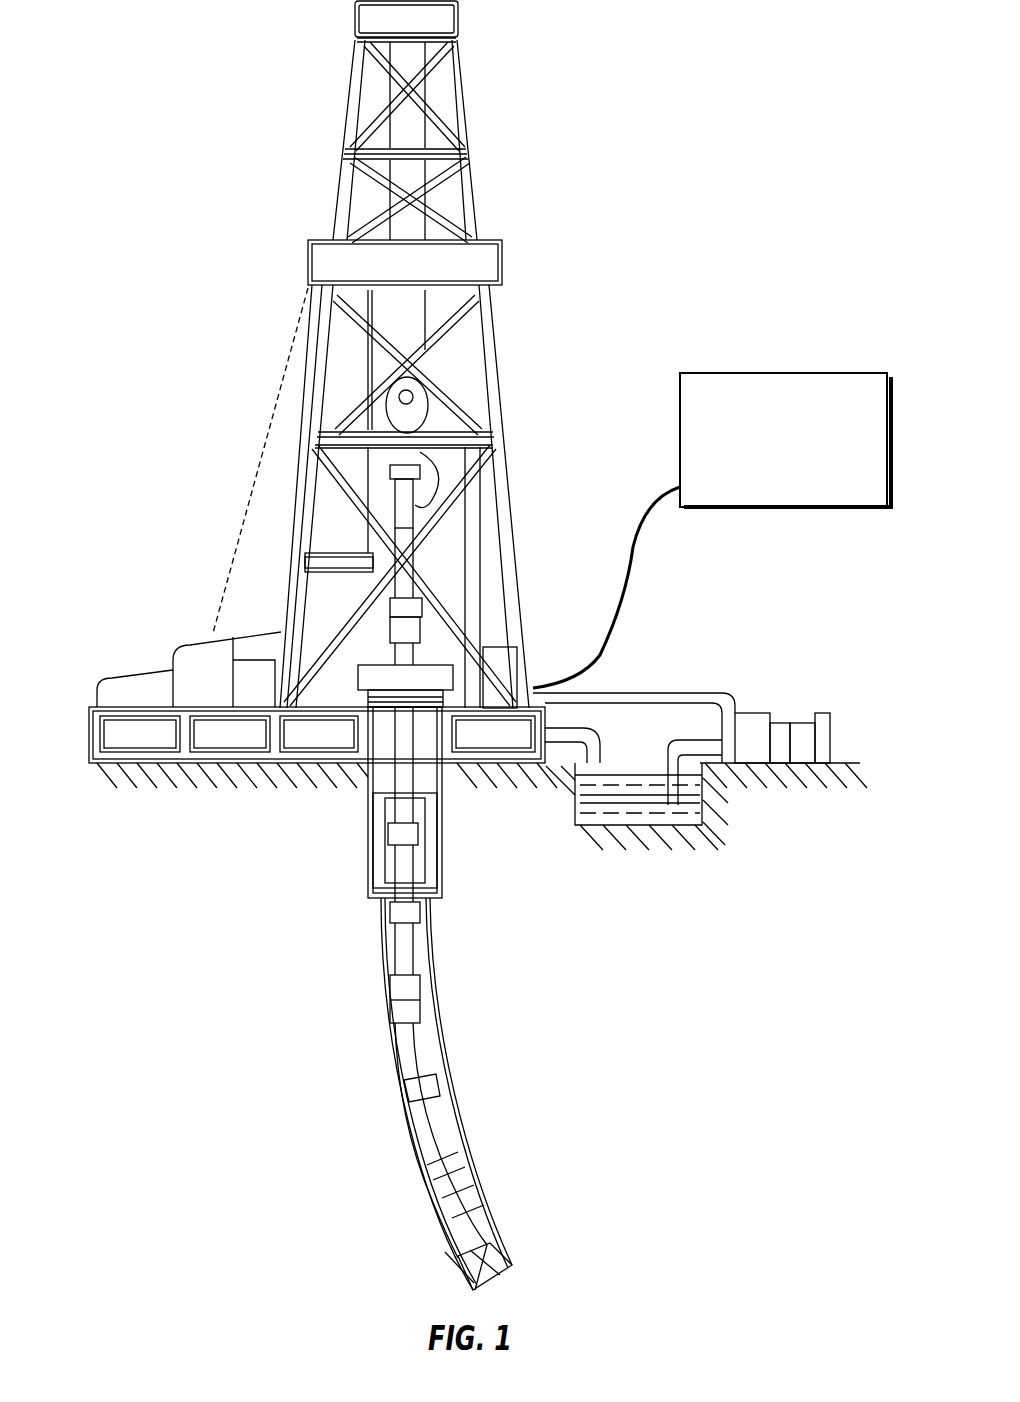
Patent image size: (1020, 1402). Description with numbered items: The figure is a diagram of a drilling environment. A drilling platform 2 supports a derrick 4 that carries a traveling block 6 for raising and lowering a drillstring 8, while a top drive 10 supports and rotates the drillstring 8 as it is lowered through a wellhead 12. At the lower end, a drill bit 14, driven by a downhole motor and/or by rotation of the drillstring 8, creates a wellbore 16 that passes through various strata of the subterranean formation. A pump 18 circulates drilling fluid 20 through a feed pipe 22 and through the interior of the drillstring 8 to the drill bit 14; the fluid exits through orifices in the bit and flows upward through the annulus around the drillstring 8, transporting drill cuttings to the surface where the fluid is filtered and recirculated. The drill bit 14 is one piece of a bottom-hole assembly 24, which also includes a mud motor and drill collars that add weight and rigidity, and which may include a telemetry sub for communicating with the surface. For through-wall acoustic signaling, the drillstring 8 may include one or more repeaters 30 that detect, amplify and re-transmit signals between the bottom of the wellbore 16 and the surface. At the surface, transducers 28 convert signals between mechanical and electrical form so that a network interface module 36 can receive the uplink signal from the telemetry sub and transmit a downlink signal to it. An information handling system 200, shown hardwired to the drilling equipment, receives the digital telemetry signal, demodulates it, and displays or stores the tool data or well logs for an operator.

The drilling platform 2 is at (90, 740).
The derrick 4 is at (478, 200).
The traveling block 6 is at (430, 387).
The drillstring 8 is at (410, 950).
The top drive 10 is at (417, 463).
The wellhead 12 is at (437, 665).
The drill bit 14 is at (505, 1250).
The wellbore 16 is at (445, 1023).
The pump 18 is at (750, 725).
The drilling fluid 20 is at (612, 810).
The feed pipe 22 is at (645, 690).
The bottom-hole assembly 24 is at (473, 1287).
The transducers 28 is at (410, 585).
The repeater 30 is at (385, 1005).
The network interface module 36 is at (247, 672).
The information handling system 200 is at (712, 530).